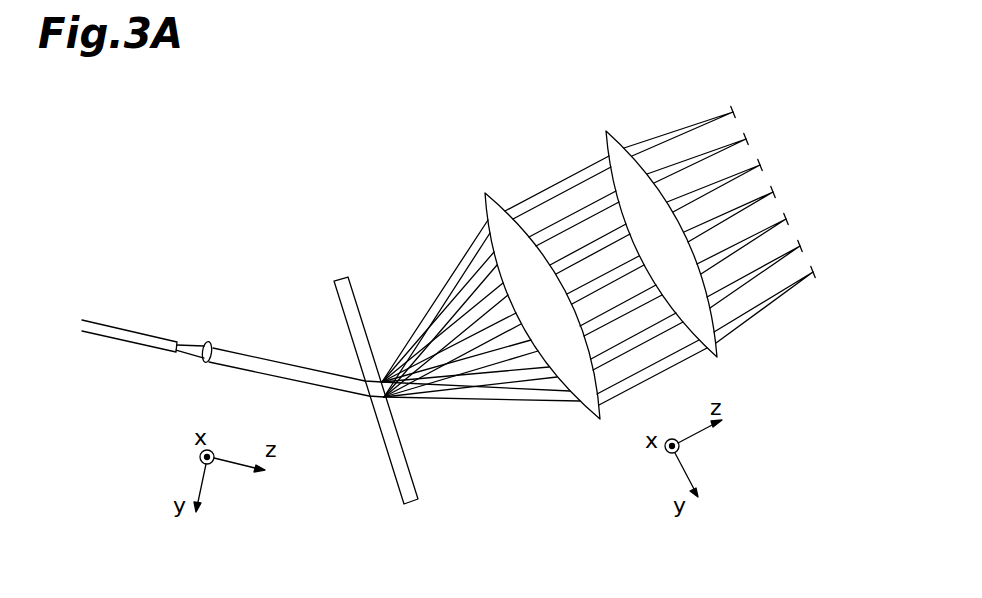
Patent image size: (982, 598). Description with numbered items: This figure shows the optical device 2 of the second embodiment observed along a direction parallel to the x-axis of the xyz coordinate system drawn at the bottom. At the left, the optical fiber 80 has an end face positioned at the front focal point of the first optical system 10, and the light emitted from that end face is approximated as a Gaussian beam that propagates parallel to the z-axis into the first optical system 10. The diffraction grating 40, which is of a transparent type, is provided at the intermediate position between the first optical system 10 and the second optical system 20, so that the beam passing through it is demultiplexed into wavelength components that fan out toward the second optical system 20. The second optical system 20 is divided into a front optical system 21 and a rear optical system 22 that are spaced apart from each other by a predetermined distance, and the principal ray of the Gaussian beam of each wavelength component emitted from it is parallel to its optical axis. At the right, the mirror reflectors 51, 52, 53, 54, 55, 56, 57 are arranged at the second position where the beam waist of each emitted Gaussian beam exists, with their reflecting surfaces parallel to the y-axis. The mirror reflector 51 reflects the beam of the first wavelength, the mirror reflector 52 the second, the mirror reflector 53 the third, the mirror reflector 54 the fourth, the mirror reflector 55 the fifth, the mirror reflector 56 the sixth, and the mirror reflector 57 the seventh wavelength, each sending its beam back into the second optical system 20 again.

The optical device 2 is at (254, 163).
The first optical system 10 is at (207, 343).
The second optical system 20 is at (448, 146).
The front optical system 21 is at (488, 192).
The rear optical system 22 is at (605, 131).
The diffraction grating 40 is at (346, 279).
The mirror reflector 51 is at (737, 111).
The mirror reflector 52 is at (750, 138).
The mirror reflector 53 is at (764, 164).
The mirror reflector 54 is at (777, 191).
The mirror reflector 55 is at (790, 218).
The mirror reflector 56 is at (804, 245).
The mirror reflector 57 is at (817, 271).
The optical fiber 80 is at (119, 328).